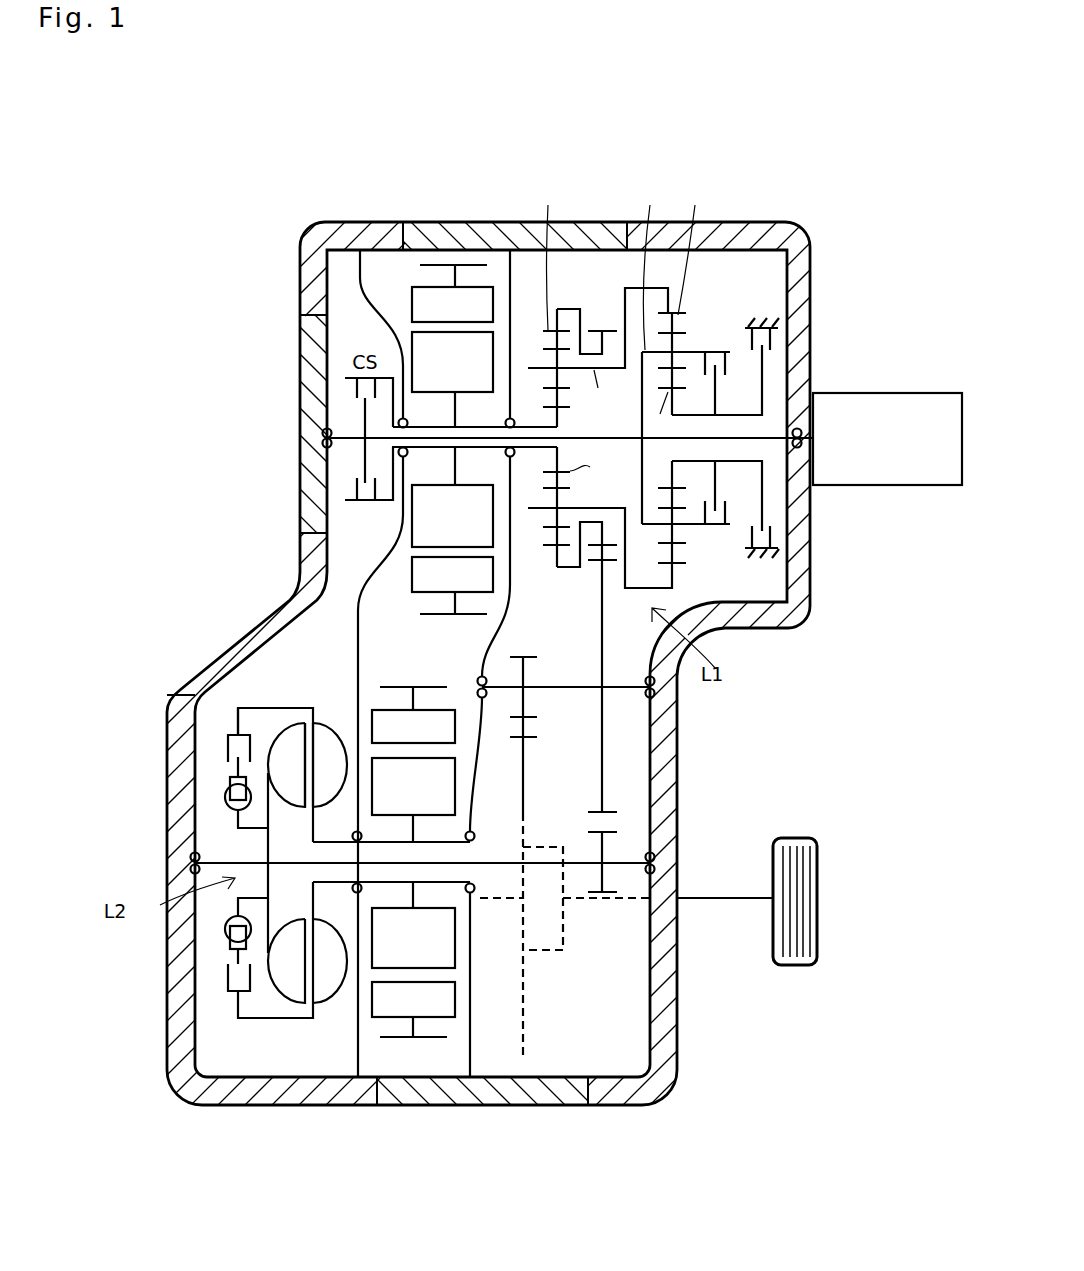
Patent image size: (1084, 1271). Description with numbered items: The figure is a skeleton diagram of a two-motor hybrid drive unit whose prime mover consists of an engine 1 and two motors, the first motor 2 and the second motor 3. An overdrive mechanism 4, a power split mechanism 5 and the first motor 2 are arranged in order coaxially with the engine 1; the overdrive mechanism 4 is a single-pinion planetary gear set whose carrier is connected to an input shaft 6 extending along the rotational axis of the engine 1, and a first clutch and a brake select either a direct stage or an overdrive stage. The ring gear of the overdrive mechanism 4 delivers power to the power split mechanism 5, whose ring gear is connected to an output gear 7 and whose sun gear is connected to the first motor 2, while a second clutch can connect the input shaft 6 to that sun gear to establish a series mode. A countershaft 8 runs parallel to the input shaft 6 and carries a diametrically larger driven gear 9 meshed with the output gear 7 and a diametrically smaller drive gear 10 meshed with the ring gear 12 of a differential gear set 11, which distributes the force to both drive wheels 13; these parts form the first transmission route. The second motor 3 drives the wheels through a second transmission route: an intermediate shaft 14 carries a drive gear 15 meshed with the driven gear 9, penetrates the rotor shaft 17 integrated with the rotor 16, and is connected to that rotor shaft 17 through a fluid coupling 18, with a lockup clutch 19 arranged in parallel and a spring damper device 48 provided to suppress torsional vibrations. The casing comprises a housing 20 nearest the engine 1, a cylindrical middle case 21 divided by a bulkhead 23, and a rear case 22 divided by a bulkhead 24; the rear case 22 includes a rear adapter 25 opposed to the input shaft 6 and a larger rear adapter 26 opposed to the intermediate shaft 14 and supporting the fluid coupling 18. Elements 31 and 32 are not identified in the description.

The engine 1 is at (905, 393).
The first motor 2 is at (410, 298).
The second motor 3 is at (456, 1000).
The overdrive mechanism 4 is at (718, 280).
The power split mechanism 5 is at (578, 276).
The input shaft 6 is at (737, 437).
The output gear 7 is at (608, 330).
The countershaft 8 is at (565, 686).
The driven gear 9 is at (602, 612).
The drive gear 10 is at (523, 657).
The differential gear set 11 is at (565, 940).
The ring gear 12 is at (537, 738).
The drive wheels 13 is at (793, 838).
The intermediate shaft 14 is at (500, 862).
The drive gear 15 is at (613, 834).
The rotor 16 is at (456, 946).
The rotor shaft 17 is at (388, 886).
The fluid coupling 18 is at (297, 670).
The lockup clutch 19 is at (208, 997).
The housing 20 is at (738, 235).
The middle case 21 is at (492, 238).
The rear case 22 is at (318, 228).
The bulkhead 23 is at (512, 588).
The bulkhead 24 is at (357, 600).
The rear adapter 25 is at (313, 338).
The rear adapter 26 is at (185, 1018).
The sleeve 31 is at (332, 722).
The actuator 32 is at (238, 705).
The spring damper device 48 is at (226, 797).